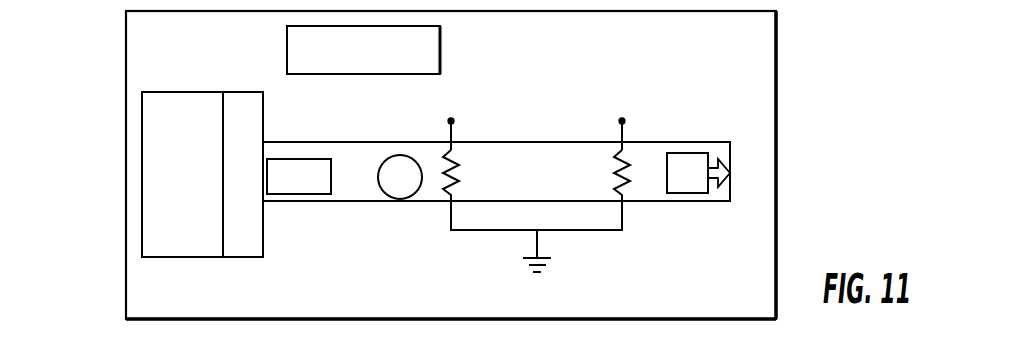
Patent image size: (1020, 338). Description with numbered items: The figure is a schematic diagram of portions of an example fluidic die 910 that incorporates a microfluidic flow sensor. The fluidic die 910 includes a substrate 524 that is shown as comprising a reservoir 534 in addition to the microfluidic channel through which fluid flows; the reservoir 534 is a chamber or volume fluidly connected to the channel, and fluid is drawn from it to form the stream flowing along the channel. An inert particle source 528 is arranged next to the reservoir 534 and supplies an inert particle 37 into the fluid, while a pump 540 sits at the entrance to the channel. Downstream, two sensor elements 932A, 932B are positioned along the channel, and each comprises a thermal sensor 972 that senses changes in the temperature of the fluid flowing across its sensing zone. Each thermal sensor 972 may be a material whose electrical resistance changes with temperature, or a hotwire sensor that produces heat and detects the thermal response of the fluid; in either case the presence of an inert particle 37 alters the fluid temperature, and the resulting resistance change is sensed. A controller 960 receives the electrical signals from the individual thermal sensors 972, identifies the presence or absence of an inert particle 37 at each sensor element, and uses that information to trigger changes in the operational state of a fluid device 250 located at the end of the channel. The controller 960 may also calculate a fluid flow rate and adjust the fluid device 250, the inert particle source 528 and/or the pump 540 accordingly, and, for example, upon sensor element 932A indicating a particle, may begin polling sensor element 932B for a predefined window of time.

The fluidic die 910 is at (62, 87).
The controller 960 is at (287, 62).
The inert particle source 528 is at (142, 181).
The reservoir 534 is at (250, 260).
The substrate 524 is at (777, 187).
The pump 540 is at (293, 159).
The inert particle 37 is at (402, 199).
The sensor element 932A is at (456, 113).
The sensor element 932B is at (623, 113).
The thermal sensor 972 is at (460, 170).
The fluid device 250 is at (702, 143).